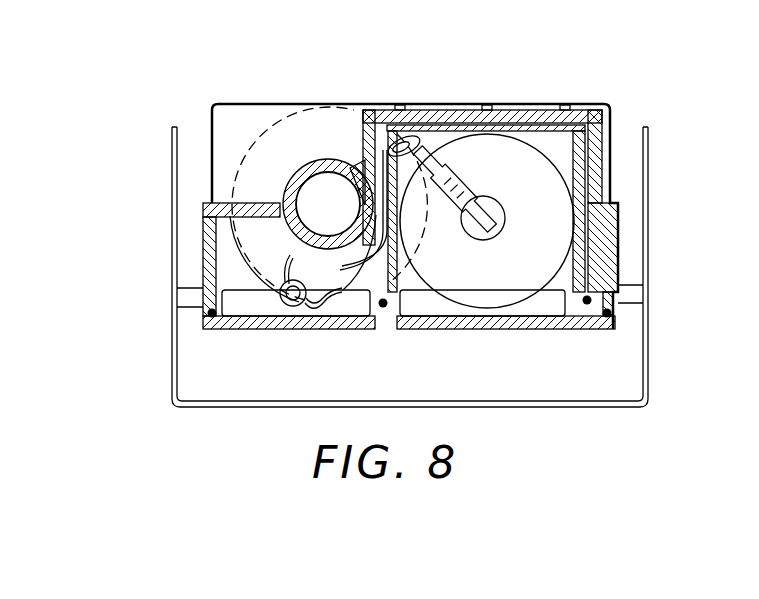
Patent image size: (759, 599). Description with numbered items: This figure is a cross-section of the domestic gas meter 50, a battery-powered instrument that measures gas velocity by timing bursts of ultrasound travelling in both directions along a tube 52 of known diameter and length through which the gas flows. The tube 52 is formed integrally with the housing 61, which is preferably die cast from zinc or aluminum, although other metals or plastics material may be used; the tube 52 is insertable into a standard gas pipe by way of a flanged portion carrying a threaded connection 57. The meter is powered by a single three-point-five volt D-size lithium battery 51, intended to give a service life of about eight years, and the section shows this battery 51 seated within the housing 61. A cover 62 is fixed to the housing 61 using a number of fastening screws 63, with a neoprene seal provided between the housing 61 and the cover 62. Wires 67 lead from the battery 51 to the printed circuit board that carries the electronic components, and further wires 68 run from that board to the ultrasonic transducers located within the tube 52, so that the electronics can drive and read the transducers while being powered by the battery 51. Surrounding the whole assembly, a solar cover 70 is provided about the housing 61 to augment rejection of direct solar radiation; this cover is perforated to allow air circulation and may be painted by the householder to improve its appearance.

The gas meter 50 is at (673, 104).
The battery 51 is at (541, 148).
The tube 52 is at (327, 158).
The threaded connection 57 is at (247, 147).
The housing 61 is at (613, 104).
The cover 62 is at (233, 329).
The fastening screws 63 is at (241, 315).
The wires 67 is at (410, 150).
The wires 68 is at (286, 310).
The solar cover 70 is at (593, 408).